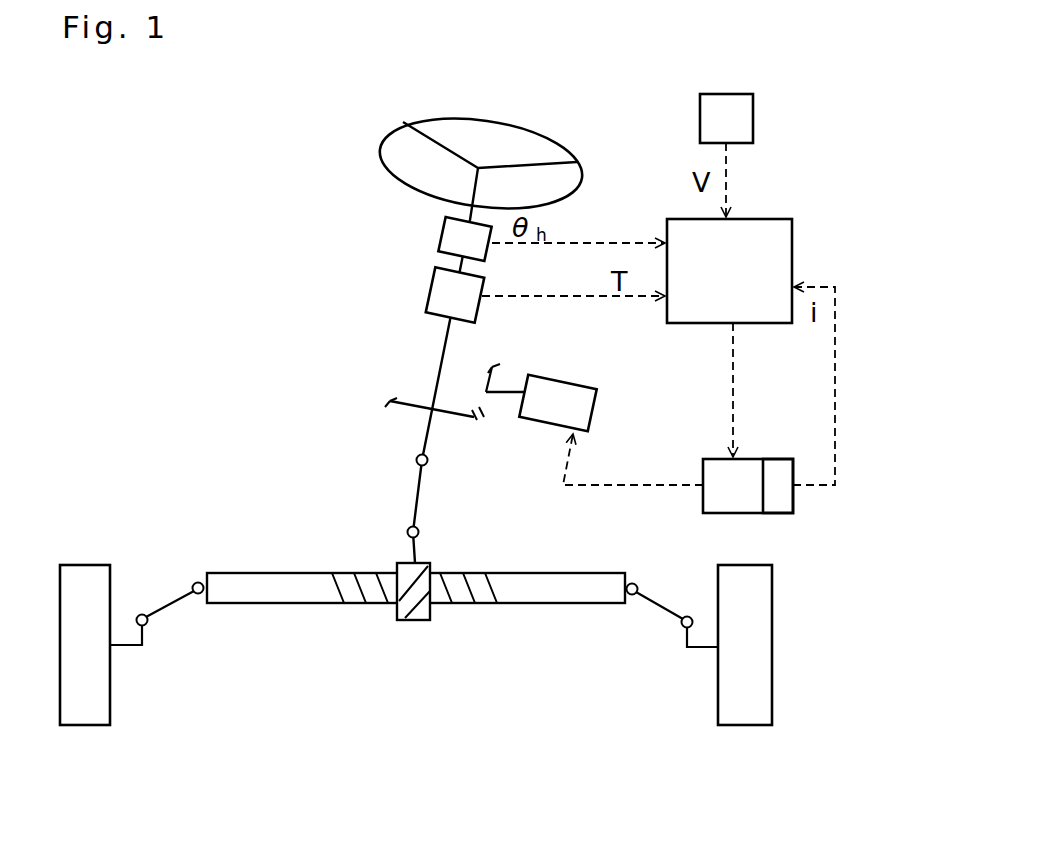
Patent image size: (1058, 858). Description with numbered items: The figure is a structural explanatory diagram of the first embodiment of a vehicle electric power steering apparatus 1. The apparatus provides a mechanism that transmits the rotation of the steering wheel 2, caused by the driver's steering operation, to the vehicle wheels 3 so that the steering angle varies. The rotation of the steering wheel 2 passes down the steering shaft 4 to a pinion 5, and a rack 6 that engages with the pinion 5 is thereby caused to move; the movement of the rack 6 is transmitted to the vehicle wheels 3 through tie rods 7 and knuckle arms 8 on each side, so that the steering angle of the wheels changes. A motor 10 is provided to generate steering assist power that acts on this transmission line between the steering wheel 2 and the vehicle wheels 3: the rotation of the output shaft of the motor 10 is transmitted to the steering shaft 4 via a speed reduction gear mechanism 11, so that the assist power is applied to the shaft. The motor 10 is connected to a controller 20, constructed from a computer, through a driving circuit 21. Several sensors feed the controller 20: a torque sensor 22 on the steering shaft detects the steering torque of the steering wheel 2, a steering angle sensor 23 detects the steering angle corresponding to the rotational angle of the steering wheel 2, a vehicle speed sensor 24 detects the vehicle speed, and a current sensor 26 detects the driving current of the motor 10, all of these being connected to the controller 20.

The electric power steering apparatus 1 is at (497, 108).
The steering wheel 2 is at (380, 148).
The vehicle wheels 3 is at (85, 712).
The steering shaft 4 is at (442, 365).
The pinion 5 is at (410, 608).
The rack 6 is at (352, 598).
The tie rods 7 is at (172, 607).
The knuckle arms 8 is at (127, 648).
The motor 10 is at (556, 393).
The speed reduction gear mechanism 11 is at (455, 424).
The controller 20 is at (770, 243).
The driving circuit 21 is at (720, 473).
The torque sensor 22 is at (436, 292).
The steering angle sensor 23 is at (445, 238).
The vehicle speed sensor 24 is at (720, 105).
The current sensor 26 is at (778, 470).